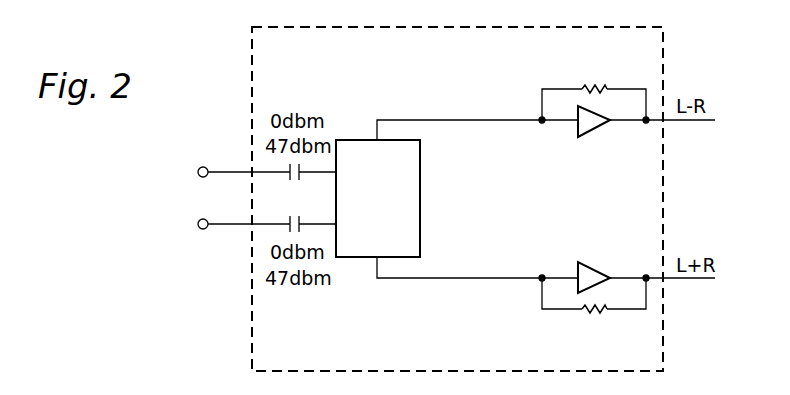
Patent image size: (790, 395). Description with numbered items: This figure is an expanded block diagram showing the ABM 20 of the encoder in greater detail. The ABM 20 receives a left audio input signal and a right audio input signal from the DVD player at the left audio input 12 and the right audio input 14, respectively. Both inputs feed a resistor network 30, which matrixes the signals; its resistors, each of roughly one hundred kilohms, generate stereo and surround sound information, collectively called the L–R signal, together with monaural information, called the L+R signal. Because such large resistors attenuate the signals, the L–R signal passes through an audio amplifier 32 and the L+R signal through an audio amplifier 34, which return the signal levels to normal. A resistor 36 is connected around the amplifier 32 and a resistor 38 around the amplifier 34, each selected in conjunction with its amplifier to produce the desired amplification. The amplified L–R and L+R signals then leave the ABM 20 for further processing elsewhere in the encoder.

The left audio input 12 is at (198, 170).
The right audio input 14 is at (198, 226).
The ABM 20 is at (252, 70).
The resistor network 30 is at (392, 210).
The audio amplifier 32 is at (597, 126).
The audio amplifier 34 is at (597, 272).
The resistor 36 is at (596, 85).
The resistor 38 is at (596, 313).